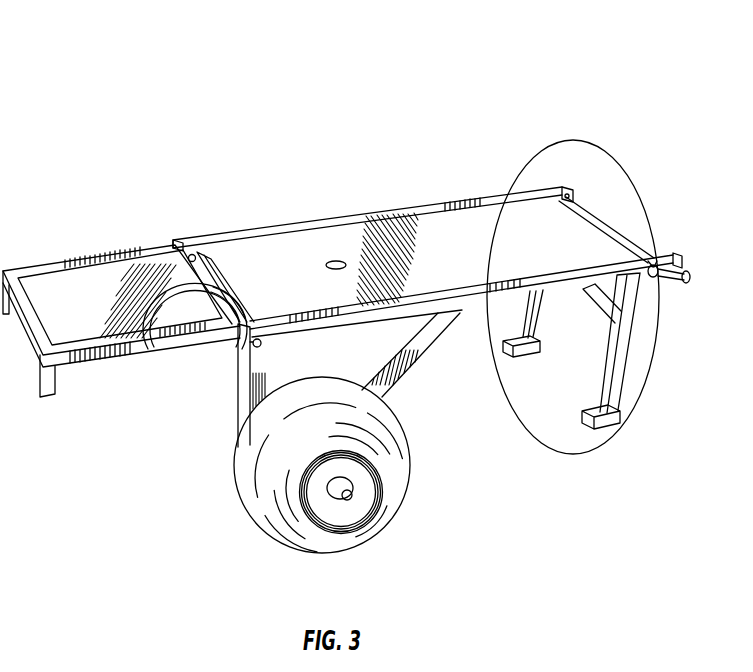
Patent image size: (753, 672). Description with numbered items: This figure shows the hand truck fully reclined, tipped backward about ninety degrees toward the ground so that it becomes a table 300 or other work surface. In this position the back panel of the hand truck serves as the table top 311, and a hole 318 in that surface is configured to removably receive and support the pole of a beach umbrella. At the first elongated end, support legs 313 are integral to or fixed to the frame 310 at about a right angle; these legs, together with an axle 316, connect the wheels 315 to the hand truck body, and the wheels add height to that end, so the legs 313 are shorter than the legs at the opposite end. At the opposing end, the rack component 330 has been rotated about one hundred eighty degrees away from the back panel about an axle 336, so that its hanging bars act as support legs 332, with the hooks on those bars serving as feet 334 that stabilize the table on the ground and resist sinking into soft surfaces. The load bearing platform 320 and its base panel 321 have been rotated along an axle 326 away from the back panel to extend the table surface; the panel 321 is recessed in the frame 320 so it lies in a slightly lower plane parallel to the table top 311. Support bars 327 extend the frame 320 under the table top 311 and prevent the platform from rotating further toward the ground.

The table 300 is at (445, 118).
The frame 310 is at (465, 200).
The table top 311 is at (270, 263).
The support legs 313 is at (243, 363).
The wheels 315 is at (300, 543).
The axle 316 is at (348, 499).
The hole 318 is at (338, 261).
The load bearing platform 320 is at (30, 318).
The base panel 321 is at (103, 296).
The axle 326 is at (240, 343).
The support bars 327 is at (197, 250).
The rack component 330 is at (537, 440).
The support legs 332 is at (622, 365).
The feet 334 is at (604, 421).
The axle 336 is at (653, 261).